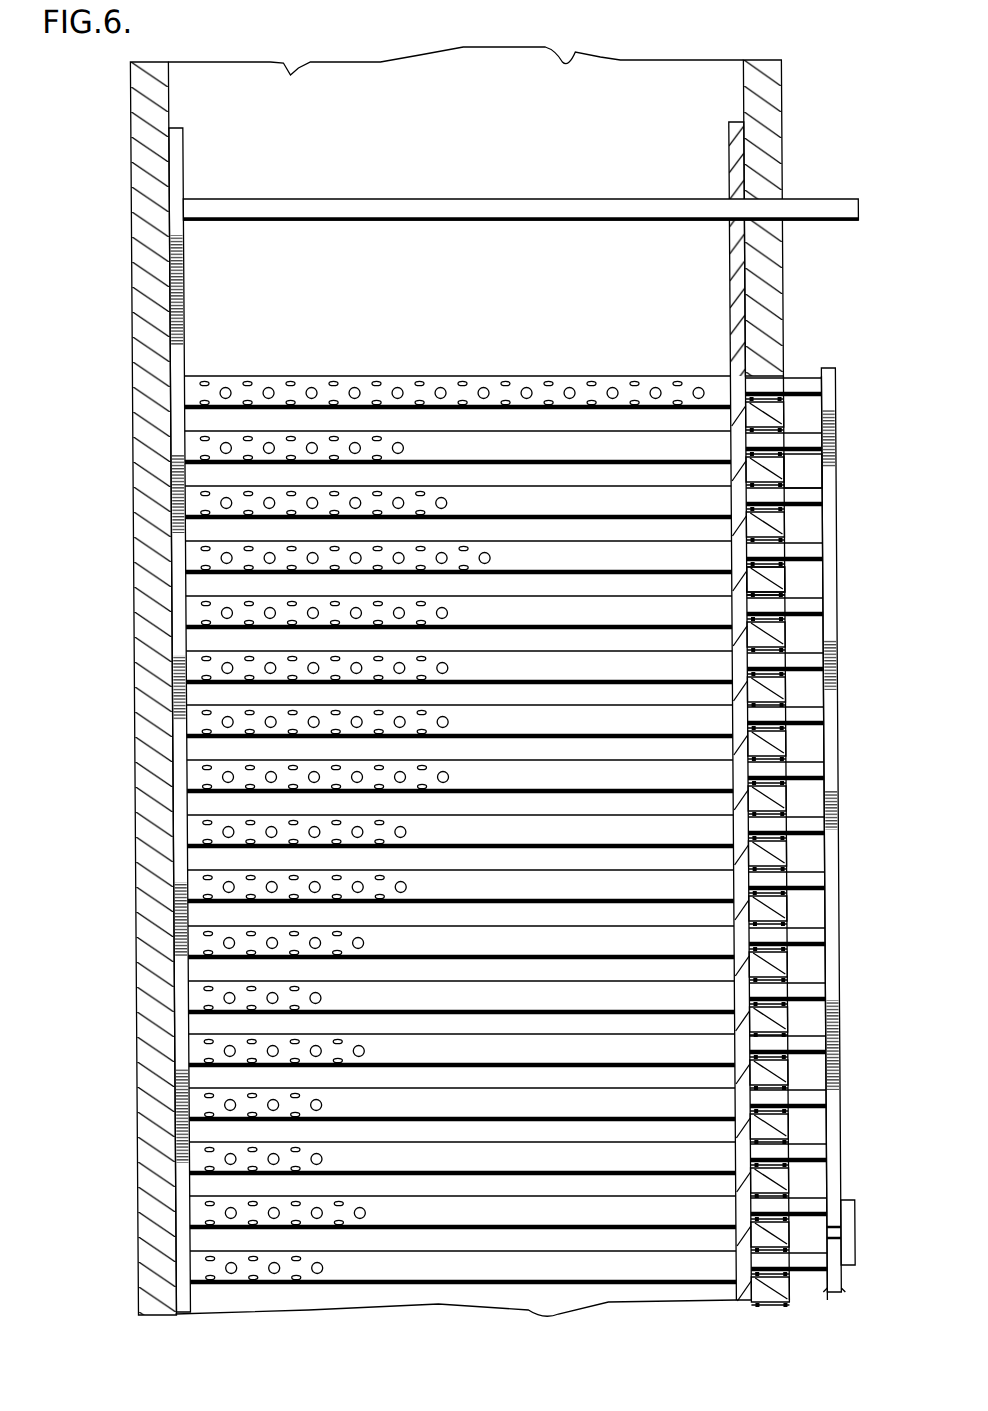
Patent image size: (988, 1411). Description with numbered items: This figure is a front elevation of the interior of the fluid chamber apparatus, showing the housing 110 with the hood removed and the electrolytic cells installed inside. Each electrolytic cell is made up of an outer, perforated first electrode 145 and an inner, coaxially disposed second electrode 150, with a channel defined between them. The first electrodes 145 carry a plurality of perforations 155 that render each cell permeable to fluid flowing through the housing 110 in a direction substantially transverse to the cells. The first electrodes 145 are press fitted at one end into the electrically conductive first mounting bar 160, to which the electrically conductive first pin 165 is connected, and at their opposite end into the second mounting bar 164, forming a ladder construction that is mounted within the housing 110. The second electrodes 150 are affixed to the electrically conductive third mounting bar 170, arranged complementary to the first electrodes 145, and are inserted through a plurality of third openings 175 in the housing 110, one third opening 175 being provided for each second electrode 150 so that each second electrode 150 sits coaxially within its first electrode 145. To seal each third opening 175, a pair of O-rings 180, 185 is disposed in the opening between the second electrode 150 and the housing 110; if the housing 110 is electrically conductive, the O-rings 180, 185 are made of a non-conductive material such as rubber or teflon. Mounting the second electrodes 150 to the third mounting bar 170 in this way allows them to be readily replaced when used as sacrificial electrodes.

The housing 110 is at (150, 143).
The first electrode 145 is at (472, 380).
The second electrode 150 is at (795, 378).
The perforations 155 is at (352, 385).
The first mounting bar 160 is at (175, 345).
The second mounting bar 164 is at (731, 262).
The first pin 165 is at (432, 203).
The third mounting bar 170 is at (833, 396).
The third opening 175 is at (784, 482).
The O-ring 180 is at (765, 583).
The O-ring 185 is at (776, 598).